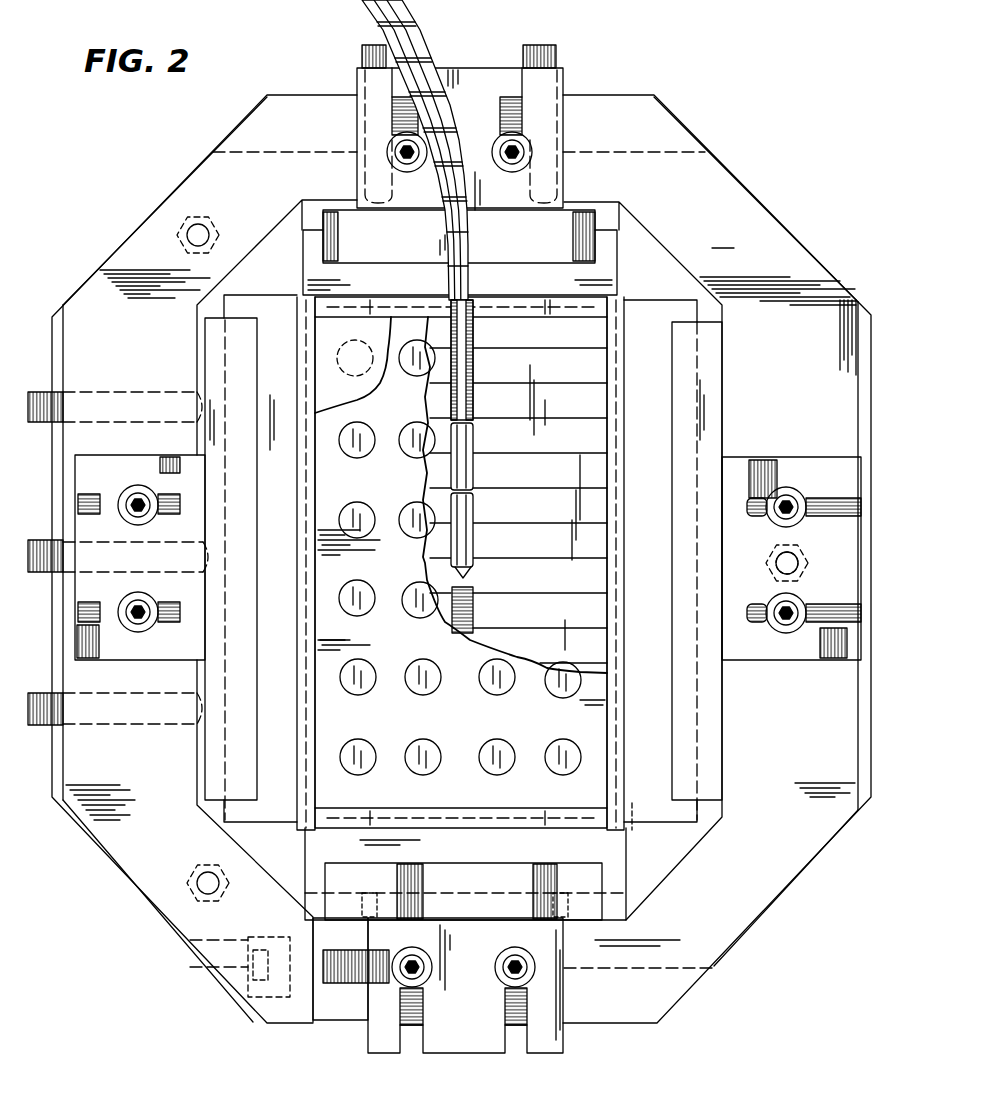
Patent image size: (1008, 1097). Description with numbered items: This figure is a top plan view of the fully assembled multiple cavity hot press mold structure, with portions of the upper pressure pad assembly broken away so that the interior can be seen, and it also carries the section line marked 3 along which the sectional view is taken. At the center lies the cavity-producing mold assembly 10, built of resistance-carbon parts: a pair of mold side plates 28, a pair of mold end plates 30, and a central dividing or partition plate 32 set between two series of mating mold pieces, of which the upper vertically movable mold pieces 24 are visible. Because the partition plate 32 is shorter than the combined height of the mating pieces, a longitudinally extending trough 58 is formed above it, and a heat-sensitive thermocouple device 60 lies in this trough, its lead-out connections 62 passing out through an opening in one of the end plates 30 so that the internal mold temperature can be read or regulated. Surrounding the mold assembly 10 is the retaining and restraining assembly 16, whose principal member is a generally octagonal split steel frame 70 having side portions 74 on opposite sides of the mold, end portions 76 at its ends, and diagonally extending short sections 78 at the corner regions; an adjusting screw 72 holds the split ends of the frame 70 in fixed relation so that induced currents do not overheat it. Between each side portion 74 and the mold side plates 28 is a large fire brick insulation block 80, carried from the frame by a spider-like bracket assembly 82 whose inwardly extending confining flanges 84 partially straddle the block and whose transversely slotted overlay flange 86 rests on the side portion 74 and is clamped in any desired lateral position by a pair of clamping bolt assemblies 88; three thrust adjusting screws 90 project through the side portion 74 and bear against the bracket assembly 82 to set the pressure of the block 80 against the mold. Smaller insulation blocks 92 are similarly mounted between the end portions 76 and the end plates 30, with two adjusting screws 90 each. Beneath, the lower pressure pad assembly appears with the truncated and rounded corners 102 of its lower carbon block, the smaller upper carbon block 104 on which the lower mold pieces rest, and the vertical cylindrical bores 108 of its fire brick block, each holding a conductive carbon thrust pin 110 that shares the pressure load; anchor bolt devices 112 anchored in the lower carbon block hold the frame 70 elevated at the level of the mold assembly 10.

The cavity-producing mold assembly 10 is at (586, 332).
The retaining and restraining assembly 16 is at (722, 237).
The upper vertically movable mold pieces 24 is at (600, 480).
The mold side plates 28 is at (303, 492).
The mold end plates 30 is at (522, 300).
The central dividing or partition plate 32 is at (474, 610).
The trough 58 is at (472, 515).
The heat-sensitive thermocouple device 60 is at (473, 575).
The lead-out connections 62 is at (474, 390).
The steel frame 70 is at (792, 268).
The adjusting screw 72 is at (316, 1000).
The side portions 74 is at (842, 388).
The end portions 76 is at (572, 128).
The diagonally extending short sections 78 is at (155, 220).
The insulation block 80 is at (262, 304).
The spider-like bracket assembly 82 is at (560, 240).
The confining flanges 84 is at (446, 298).
The overlay flange 86 is at (157, 655).
The clamping bolt assemblies 88 is at (393, 146).
The adjusting screws 90 is at (365, 46).
The insulation blocks 92 is at (612, 263).
The truncated and rounded corners 102 is at (165, 928).
The upper carbon block 104 is at (633, 830).
The vertical cylindrical bores 108 is at (422, 775).
The conductive carbon thrust pins 110 is at (357, 377).
The anchor bolt devices 112 is at (808, 554).
The section line 3- 3 is at (37, 683).